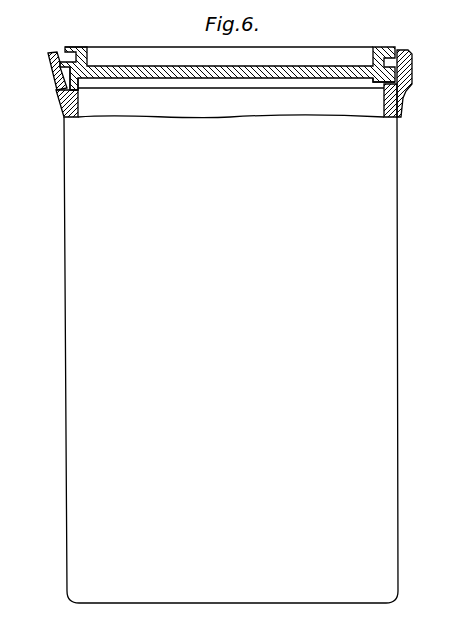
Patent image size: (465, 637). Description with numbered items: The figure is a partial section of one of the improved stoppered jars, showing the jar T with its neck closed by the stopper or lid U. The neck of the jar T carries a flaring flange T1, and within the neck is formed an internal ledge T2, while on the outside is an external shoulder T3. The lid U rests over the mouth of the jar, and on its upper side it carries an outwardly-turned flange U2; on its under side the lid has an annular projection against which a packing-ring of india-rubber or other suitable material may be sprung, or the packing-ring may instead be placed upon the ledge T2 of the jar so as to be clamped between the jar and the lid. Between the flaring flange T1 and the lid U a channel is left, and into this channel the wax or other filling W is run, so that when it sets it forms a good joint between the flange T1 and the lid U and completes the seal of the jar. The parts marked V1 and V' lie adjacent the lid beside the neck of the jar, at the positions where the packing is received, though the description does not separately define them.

The jar T is at (231, 325).
The flaring flange T1 is at (410, 74).
The internal ledge T2 is at (56, 92).
The external shoulder T3 is at (402, 96).
The stopper or lid U is at (163, 71).
The outwardly-turned flange U2 is at (72, 47).
The depending leg of cover V1 is at (80, 88).
The depending leg of cover (right) V' is at (381, 94).
The wax filling W is at (48, 63).